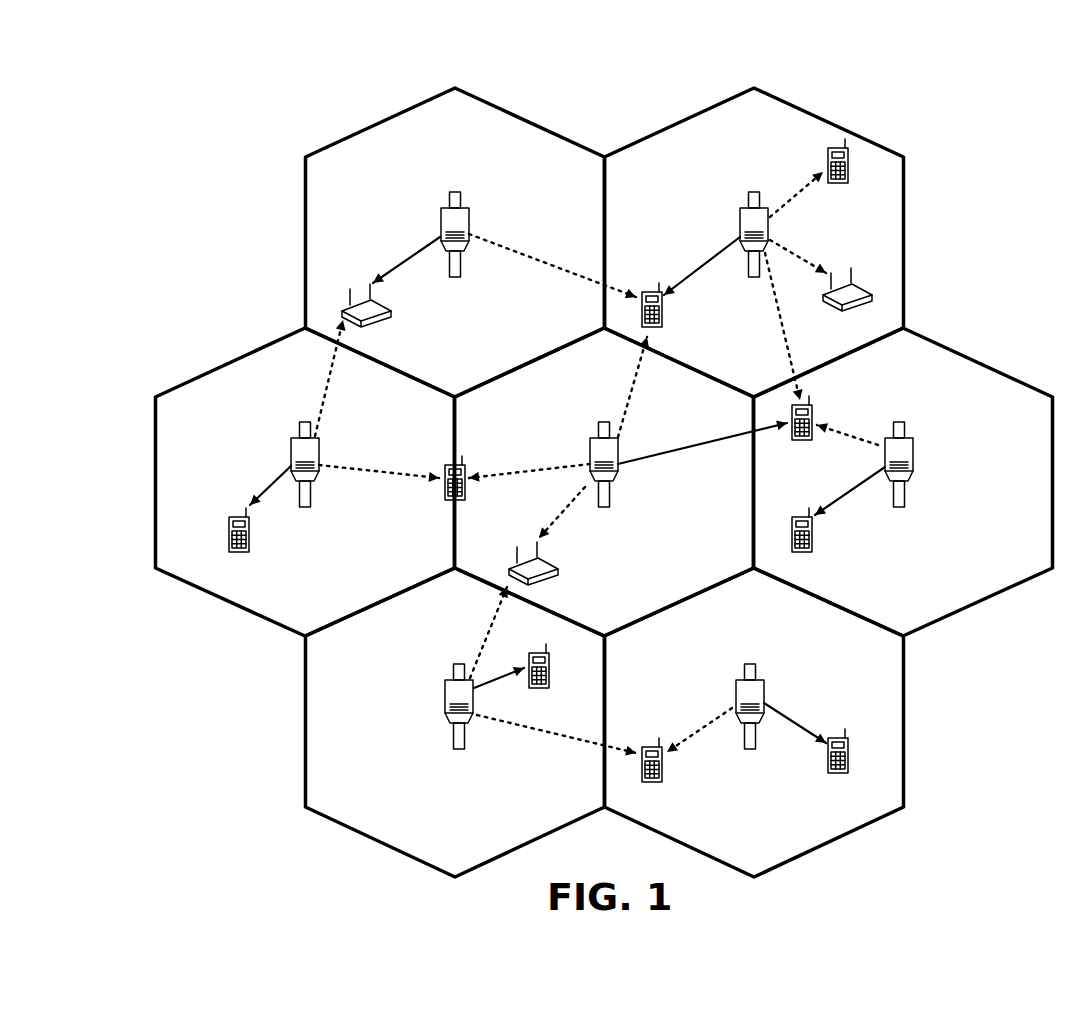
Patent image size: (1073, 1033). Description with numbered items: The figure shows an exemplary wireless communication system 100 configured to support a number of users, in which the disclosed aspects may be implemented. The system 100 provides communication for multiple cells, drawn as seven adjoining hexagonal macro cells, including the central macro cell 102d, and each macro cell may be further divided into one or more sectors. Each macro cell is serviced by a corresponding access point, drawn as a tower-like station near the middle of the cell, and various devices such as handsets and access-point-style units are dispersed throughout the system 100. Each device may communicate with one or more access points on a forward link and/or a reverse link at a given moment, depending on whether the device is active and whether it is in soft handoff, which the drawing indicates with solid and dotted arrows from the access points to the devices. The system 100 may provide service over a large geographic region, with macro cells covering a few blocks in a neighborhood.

The wireless communication system 100 is at (972, 58).
The macro cell 102d is at (627, 370).